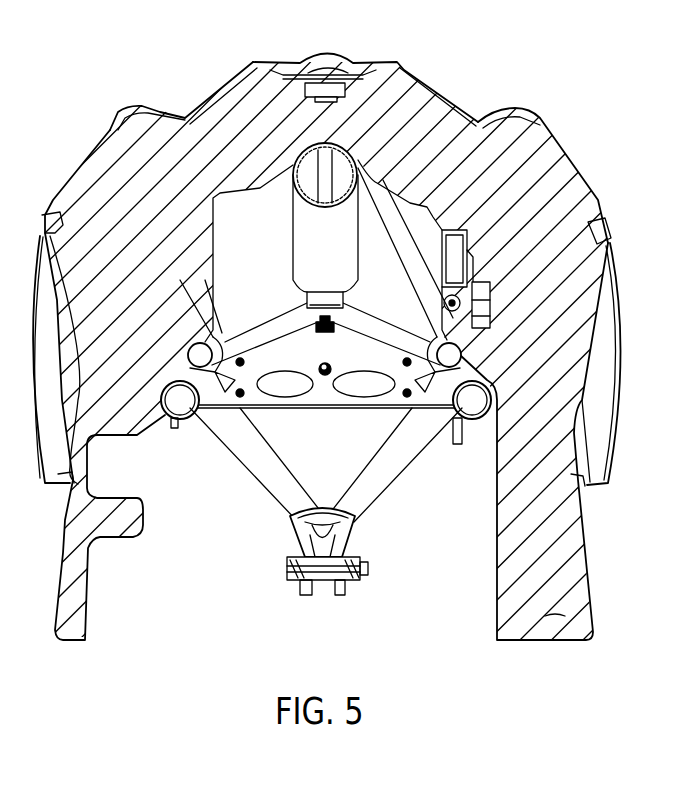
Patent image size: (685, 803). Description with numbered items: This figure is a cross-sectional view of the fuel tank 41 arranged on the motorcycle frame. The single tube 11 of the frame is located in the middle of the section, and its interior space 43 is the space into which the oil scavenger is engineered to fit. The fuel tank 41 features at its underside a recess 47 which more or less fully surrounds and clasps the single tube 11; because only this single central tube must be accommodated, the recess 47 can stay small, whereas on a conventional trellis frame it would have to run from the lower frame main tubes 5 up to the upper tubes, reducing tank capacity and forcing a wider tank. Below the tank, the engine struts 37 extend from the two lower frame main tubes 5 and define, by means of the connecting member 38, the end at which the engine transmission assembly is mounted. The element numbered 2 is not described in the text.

The steering column tube 2 is at (345, 215).
The lower frame main tubes 5 is at (174, 422).
The single tube 11 is at (305, 150).
The engine struts 37 is at (270, 483).
The connecting member 38 is at (357, 580).
The fuel tank 41 is at (572, 197).
The interior space 43 is at (307, 177).
The recess 47 is at (380, 152).